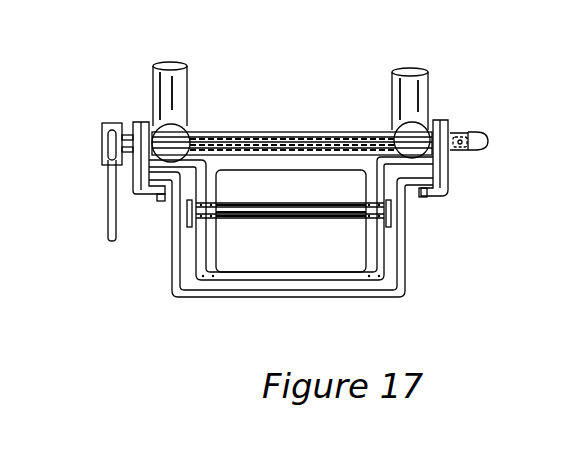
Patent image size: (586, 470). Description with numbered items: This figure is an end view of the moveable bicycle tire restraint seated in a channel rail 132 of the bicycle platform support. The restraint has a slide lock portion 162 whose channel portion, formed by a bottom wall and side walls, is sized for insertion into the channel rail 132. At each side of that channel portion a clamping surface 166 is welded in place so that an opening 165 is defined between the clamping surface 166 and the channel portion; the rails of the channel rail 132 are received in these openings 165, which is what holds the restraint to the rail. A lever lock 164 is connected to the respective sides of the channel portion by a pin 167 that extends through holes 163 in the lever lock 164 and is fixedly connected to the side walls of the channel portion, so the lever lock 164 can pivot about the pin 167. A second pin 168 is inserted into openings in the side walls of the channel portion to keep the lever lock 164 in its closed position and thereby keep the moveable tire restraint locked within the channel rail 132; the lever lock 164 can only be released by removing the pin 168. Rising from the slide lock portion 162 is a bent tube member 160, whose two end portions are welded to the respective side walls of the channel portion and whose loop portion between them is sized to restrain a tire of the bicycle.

The channel rail 132 is at (178, 292).
The bent tube member 160 is at (404, 86).
The slide lock portion 162 is at (150, 126).
The holes 163 is at (216, 216).
The lever lock 164 is at (238, 160).
The opening 165 is at (158, 204).
The clamping surface 166 is at (135, 194).
The pin 167 is at (287, 207).
The pin 168 is at (112, 124).